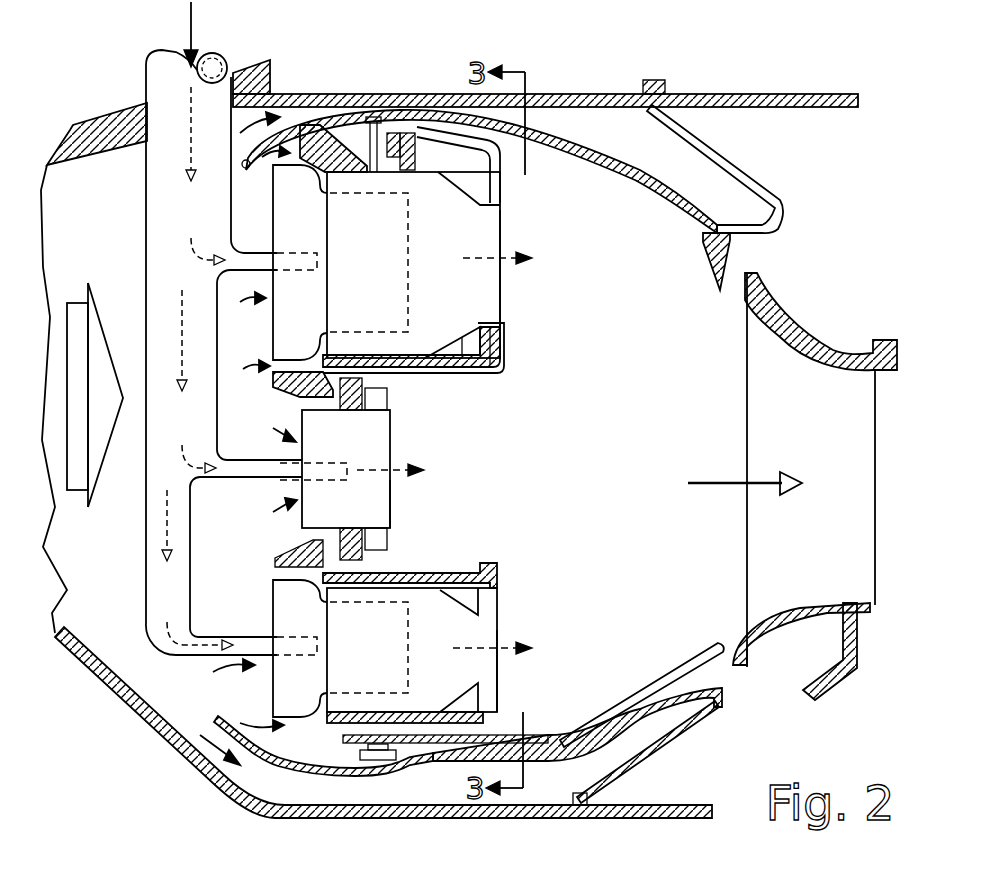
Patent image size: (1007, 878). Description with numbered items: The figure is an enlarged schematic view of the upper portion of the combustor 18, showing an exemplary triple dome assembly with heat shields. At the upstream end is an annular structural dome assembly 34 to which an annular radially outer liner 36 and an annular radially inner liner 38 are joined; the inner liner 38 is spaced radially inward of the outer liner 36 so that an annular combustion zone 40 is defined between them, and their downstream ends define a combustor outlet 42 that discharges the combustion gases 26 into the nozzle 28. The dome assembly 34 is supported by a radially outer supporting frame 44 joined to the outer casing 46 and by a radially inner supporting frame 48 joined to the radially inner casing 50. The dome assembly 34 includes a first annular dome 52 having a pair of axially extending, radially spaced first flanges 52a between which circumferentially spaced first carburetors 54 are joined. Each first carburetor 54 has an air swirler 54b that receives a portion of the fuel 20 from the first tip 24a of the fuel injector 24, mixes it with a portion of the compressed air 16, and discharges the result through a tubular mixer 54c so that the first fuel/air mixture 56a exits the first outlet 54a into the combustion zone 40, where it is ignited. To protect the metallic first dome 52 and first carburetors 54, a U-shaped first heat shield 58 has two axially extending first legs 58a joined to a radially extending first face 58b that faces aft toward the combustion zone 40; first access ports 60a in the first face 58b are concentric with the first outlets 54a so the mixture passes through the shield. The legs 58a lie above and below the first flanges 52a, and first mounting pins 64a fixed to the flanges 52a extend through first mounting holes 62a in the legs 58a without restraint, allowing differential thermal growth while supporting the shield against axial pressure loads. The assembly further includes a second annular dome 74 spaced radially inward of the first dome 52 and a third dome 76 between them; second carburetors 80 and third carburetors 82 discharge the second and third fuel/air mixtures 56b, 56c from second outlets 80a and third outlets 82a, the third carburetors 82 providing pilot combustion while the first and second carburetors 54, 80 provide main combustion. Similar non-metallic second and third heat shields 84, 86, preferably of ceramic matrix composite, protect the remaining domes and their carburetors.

The compressed air 16 is at (88, 300).
The combustor 18 is at (830, 225).
The fuel 20 is at (188, 29).
The fuel injector 24 is at (146, 198).
The first tip 24a is at (253, 253).
The combustion gases 26 is at (717, 490).
The nozzle 28 is at (787, 327).
The dome assembly 34 is at (341, 142).
The radially outer liner 36 is at (703, 250).
The radially inner liner 38 is at (672, 672).
The combustion zone 40 is at (602, 441).
The combustor outlet 42 is at (709, 418).
The radially outer supporting frame 44 is at (627, 165).
The outer casing 46 is at (588, 94).
The radially inner supporting frame 48 is at (695, 730).
The radially inner casing 50 is at (662, 805).
The first annular dome 52 is at (373, 174).
The first flanges 52a is at (415, 174).
The first carburetors 54 is at (357, 278).
The first outlets 54a is at (502, 294).
The air swirler 54b is at (273, 348).
The mixer 54c is at (495, 215).
The first fuel/air mixture 56a is at (523, 262).
The second fuel/air mixture 56b is at (522, 645).
The third fuel/air mixture 56c is at (410, 470).
The first heat shield 58 is at (504, 376).
The first legs 58a is at (465, 200).
The first face 58b is at (502, 348).
The first access ports 60a is at (503, 192).
The first mounting holes 62a is at (390, 138).
The first mounting pins 64a is at (402, 148).
The second annular dome 74 is at (318, 732).
The third dome 76 is at (320, 397).
The second carburetors 80 is at (360, 663).
The second outlets 80a is at (500, 668).
The third carburetors 82 is at (332, 450).
The third outlets 82a is at (390, 517).
The second heat shield 84 is at (474, 565).
The third heat shield 86 is at (390, 546).